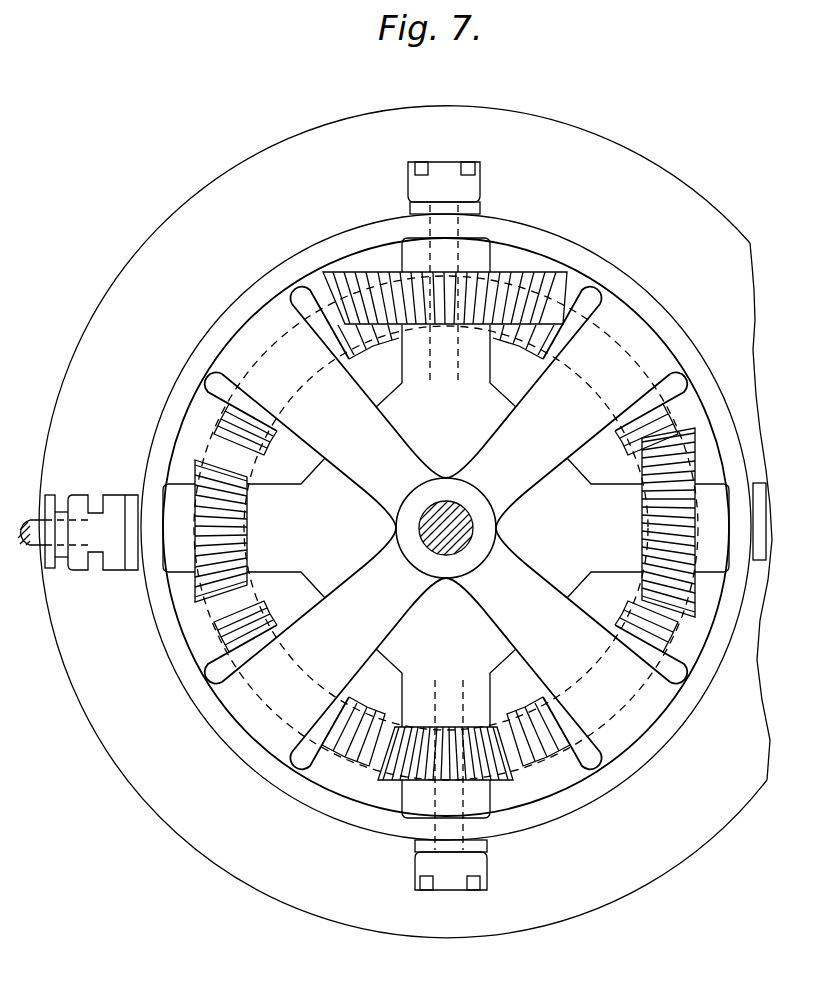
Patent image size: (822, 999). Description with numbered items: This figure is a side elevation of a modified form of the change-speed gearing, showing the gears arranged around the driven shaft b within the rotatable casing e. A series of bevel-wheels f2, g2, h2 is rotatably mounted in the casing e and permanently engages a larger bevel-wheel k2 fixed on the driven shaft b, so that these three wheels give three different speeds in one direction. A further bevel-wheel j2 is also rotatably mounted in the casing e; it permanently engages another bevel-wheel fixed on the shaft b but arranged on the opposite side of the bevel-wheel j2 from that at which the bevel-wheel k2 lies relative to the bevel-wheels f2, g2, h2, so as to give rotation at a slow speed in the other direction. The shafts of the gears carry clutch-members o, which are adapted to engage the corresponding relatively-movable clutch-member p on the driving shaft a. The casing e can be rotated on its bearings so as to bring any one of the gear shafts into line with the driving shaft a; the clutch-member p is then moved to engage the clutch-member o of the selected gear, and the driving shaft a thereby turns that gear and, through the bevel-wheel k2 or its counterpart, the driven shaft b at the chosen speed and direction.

The driving shaft a is at (31, 533).
The driven shaft b is at (464, 517).
The casing e is at (711, 379).
The clutch-members o is at (405, 526).
The clutch-member p is at (78, 500).
The bevel-wheel f2 is at (371, 812).
The bevel-wheel g2 is at (690, 455).
The bevel-wheel h2 is at (487, 278).
The bevel-wheel j2 is at (205, 540).
The bevel-wheel k2 is at (566, 306).